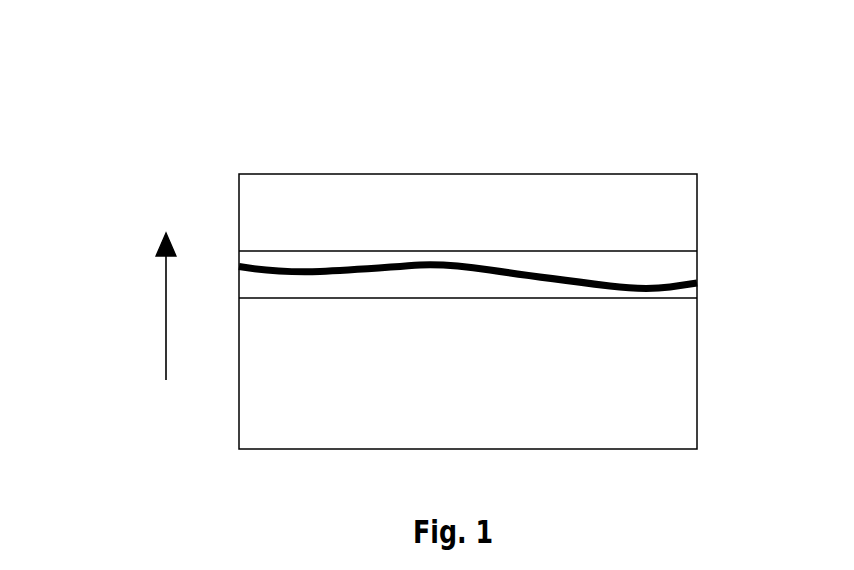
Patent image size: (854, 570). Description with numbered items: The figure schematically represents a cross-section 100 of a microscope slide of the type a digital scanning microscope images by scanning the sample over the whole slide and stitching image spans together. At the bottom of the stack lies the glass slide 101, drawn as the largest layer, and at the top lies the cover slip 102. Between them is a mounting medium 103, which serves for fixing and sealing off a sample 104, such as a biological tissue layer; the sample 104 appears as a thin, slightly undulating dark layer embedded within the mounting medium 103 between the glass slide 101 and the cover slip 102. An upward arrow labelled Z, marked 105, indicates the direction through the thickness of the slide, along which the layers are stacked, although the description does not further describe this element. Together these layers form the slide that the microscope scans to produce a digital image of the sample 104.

The cross-section 100 is at (325, 137).
The glass slide 101 is at (416, 429).
The cover slip 102 is at (433, 198).
The mounting medium 103 is at (505, 290).
The sample 104 is at (239, 266).
The Z axis direction arrow 105 is at (166, 312).